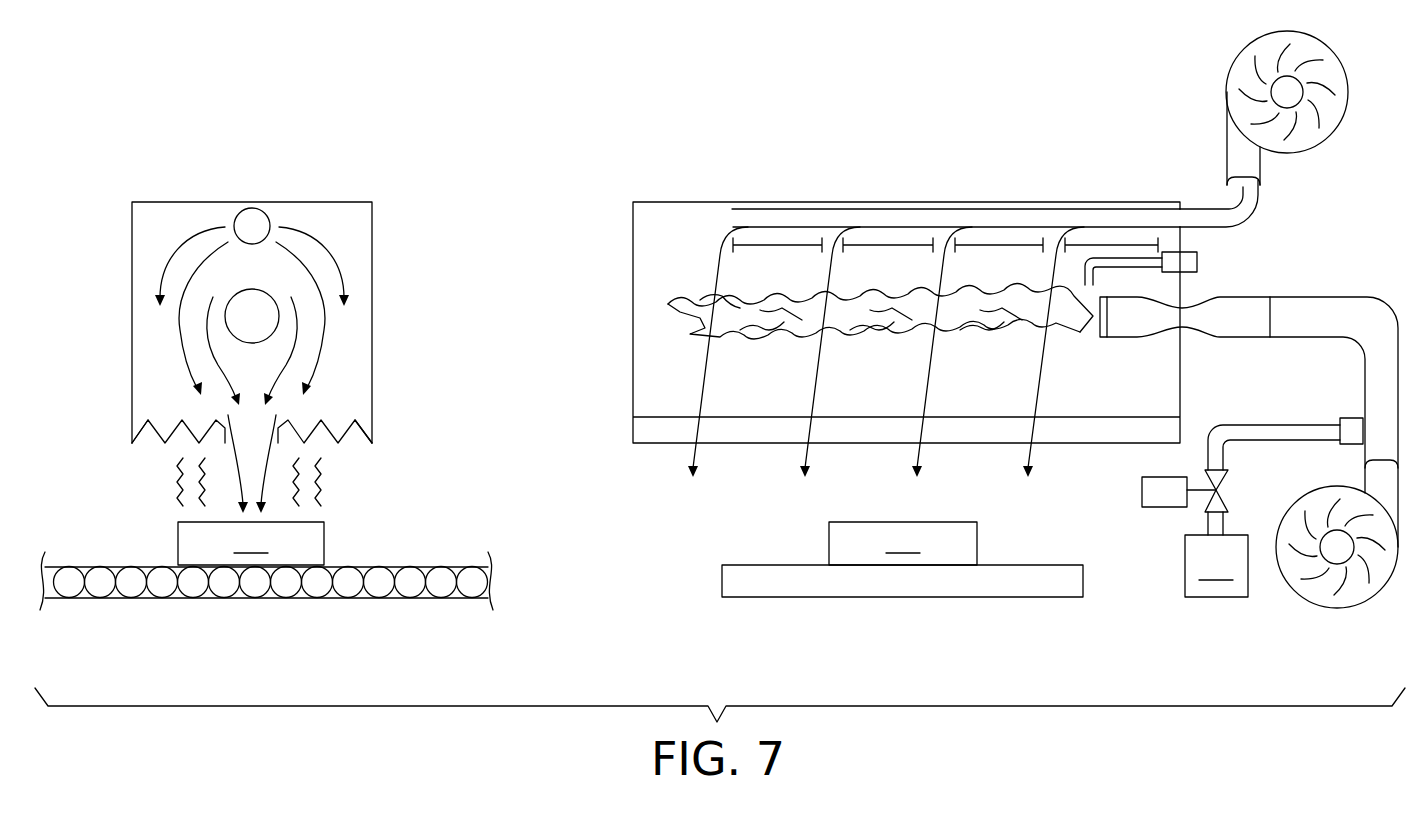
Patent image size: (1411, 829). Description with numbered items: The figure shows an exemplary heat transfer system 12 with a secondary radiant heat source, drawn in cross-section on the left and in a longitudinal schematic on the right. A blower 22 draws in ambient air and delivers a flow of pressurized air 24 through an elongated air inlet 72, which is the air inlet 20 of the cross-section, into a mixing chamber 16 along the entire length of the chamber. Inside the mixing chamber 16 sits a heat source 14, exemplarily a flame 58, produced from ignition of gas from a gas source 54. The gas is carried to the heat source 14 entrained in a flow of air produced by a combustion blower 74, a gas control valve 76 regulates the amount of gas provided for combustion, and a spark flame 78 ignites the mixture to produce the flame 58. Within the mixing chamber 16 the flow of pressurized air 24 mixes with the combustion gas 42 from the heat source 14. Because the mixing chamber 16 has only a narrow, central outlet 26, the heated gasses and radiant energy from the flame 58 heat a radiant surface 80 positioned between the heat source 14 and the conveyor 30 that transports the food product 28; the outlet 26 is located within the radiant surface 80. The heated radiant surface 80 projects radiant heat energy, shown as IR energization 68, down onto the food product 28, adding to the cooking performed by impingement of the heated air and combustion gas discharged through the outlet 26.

The heat transfer system 12 is at (340, 168).
The heat source 14 is at (273, 297).
The mixing chamber 16 is at (345, 224).
The air inlet 20 is at (240, 212).
The blower 22 is at (1330, 48).
The flow of pressurized air 24 is at (1172, 225).
The outlet 26 is at (279, 432).
The food product 28 is at (577, 543).
The conveyor 30 is at (152, 566).
The combustion gas 42 is at (207, 322).
The gas source 54 is at (1216, 566).
The flame 58 is at (1075, 327).
The IR energization 68 is at (176, 483).
The air inlet 72 is at (948, 209).
The combustion blower 74 is at (1357, 607).
The gas control valve 76 is at (1224, 483).
The spark flame 78 is at (1198, 262).
The radiant surface 80 is at (140, 443).